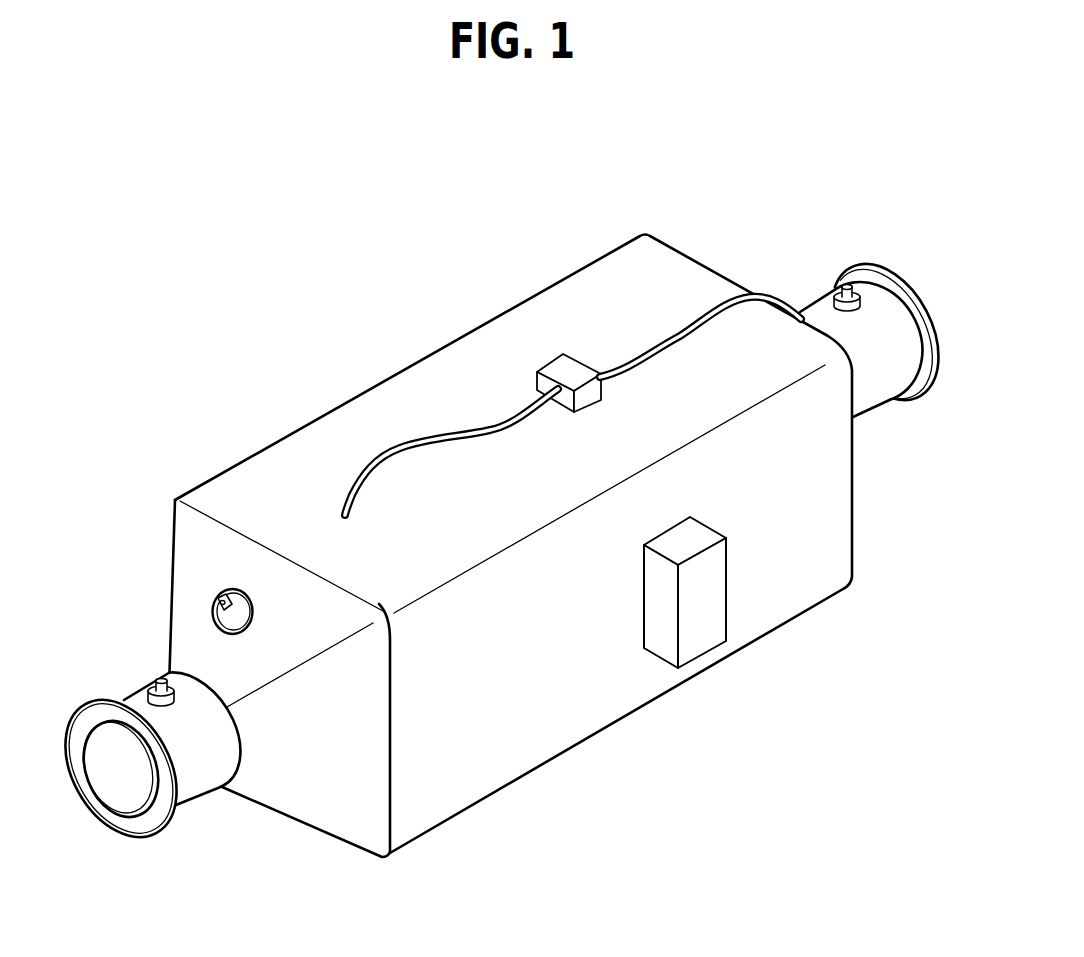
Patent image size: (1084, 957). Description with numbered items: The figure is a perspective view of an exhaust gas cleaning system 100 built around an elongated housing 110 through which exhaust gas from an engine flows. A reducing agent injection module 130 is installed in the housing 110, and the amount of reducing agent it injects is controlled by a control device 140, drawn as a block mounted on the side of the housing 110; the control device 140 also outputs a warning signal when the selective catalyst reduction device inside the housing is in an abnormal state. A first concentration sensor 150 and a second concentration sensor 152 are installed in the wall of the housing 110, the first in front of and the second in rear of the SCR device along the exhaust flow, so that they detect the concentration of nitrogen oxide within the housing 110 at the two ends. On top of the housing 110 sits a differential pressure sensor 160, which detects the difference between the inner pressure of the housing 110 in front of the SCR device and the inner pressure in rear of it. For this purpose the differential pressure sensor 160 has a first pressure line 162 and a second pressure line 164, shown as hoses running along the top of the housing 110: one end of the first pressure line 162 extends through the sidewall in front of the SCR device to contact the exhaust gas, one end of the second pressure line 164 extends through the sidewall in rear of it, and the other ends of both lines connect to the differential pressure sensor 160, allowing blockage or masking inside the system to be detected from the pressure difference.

The exhaust gas cleaning system 100 is at (271, 857).
The housing 110 is at (434, 813).
The reducing agent injection module 130 is at (213, 597).
The control device 140 is at (700, 639).
The first concentration sensor 150 is at (162, 680).
The second concentration sensor 152 is at (842, 283).
The differential pressure sensor 160 is at (560, 365).
The first pressure line 162 is at (482, 429).
The second pressure line 164 is at (653, 353).